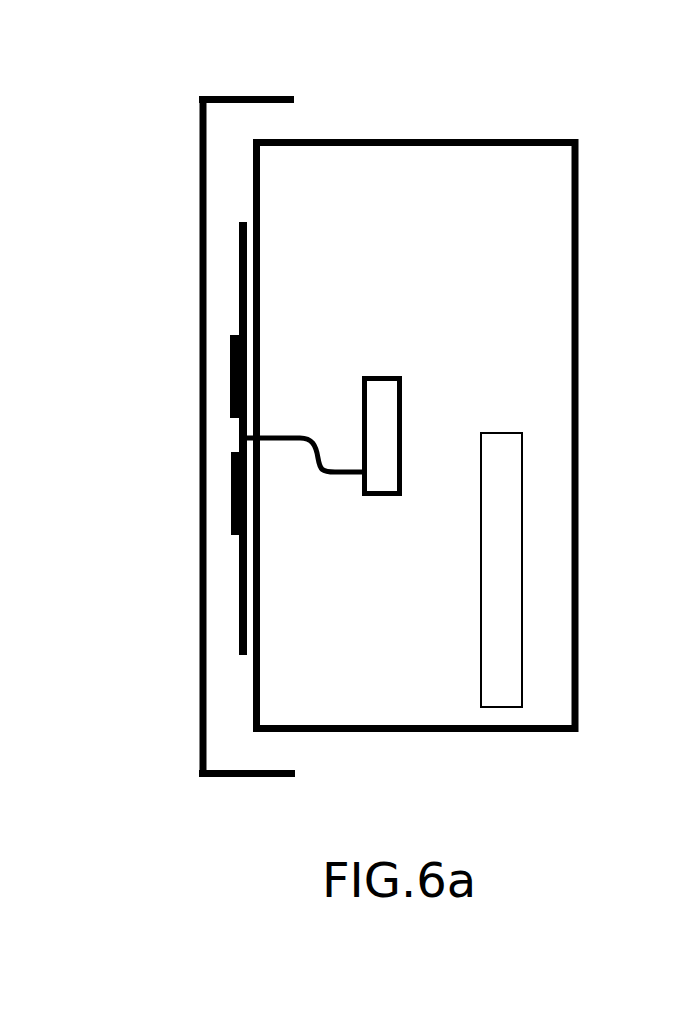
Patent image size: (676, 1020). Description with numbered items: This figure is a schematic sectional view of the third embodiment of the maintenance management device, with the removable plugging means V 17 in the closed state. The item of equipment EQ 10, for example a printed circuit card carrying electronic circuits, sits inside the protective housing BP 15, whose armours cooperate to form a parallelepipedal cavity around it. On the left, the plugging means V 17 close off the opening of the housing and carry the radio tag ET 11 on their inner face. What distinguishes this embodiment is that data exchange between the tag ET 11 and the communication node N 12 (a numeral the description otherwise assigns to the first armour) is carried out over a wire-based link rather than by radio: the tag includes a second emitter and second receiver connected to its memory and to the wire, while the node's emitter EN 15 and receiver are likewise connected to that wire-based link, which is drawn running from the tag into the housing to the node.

The removable plugging means 17 is at (203, 760).
The back plate BP1 / EN1 15 is at (294, 97).
The electrode ET1 11 is at (230, 378).
The first armour 12 is at (380, 410).
The equipment EQ1 10 is at (518, 669).